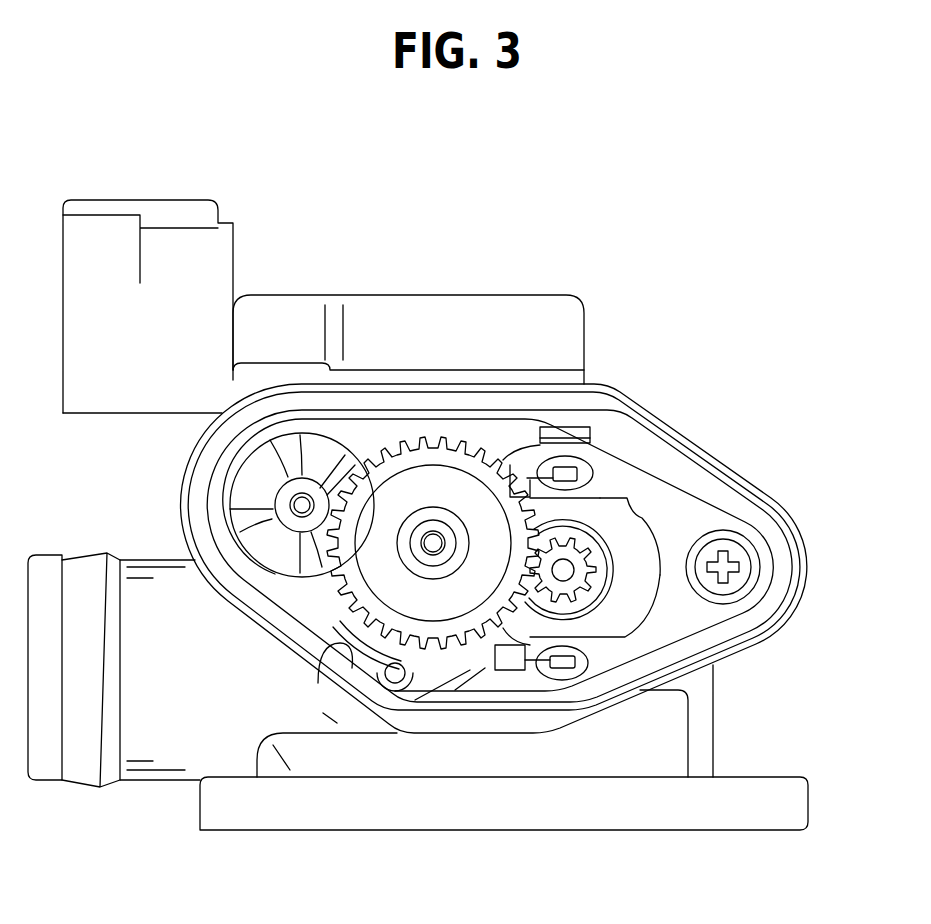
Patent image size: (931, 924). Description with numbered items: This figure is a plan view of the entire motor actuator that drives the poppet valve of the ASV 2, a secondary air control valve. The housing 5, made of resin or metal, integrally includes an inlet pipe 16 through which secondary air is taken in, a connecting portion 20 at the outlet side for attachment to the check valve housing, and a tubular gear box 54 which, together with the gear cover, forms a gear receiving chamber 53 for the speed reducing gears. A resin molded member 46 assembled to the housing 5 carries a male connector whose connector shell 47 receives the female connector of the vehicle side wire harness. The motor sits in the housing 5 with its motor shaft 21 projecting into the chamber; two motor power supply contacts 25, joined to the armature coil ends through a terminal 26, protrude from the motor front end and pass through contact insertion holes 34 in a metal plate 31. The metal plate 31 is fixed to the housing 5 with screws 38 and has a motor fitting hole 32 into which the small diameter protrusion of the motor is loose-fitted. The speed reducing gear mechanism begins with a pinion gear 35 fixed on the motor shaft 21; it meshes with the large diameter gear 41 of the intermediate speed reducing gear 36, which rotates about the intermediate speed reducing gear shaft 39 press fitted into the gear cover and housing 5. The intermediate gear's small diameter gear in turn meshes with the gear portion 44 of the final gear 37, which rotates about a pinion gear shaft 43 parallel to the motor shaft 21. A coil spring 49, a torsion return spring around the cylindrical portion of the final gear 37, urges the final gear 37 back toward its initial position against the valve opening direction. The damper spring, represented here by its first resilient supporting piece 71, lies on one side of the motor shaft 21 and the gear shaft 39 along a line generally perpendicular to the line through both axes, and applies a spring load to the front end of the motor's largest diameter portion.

The ASV 2 is at (693, 306).
The housing 5 is at (706, 467).
The inlet pipe 16 is at (45, 562).
The connecting portion 20 is at (779, 832).
The motor shaft 21 is at (605, 592).
The motor power supply contacts 25 is at (578, 427).
The terminal 26 is at (533, 667).
The metal plate 31 is at (697, 522).
The motor fitting hole 32 is at (633, 498).
The contact insertion holes 34 is at (598, 478).
The pinion gear 35 is at (627, 560).
The intermediate speed reducing gear 36 is at (499, 470).
The final gear 37 is at (353, 438).
The screws 38 is at (738, 560).
The intermediate speed reducing gear shaft 39 is at (434, 540).
The large diameter gear 41 is at (521, 545).
The pinion gear shaft 43 is at (297, 507).
The gear portion 44 is at (433, 543).
The resin molded member 46 is at (408, 295).
The connector shell 47 is at (231, 222).
The coil spring 49 is at (288, 440).
The gear receiving chamber 53 is at (350, 667).
The tubular gear box 54 is at (278, 497).
The first resilient supporting piece 71 is at (565, 470).